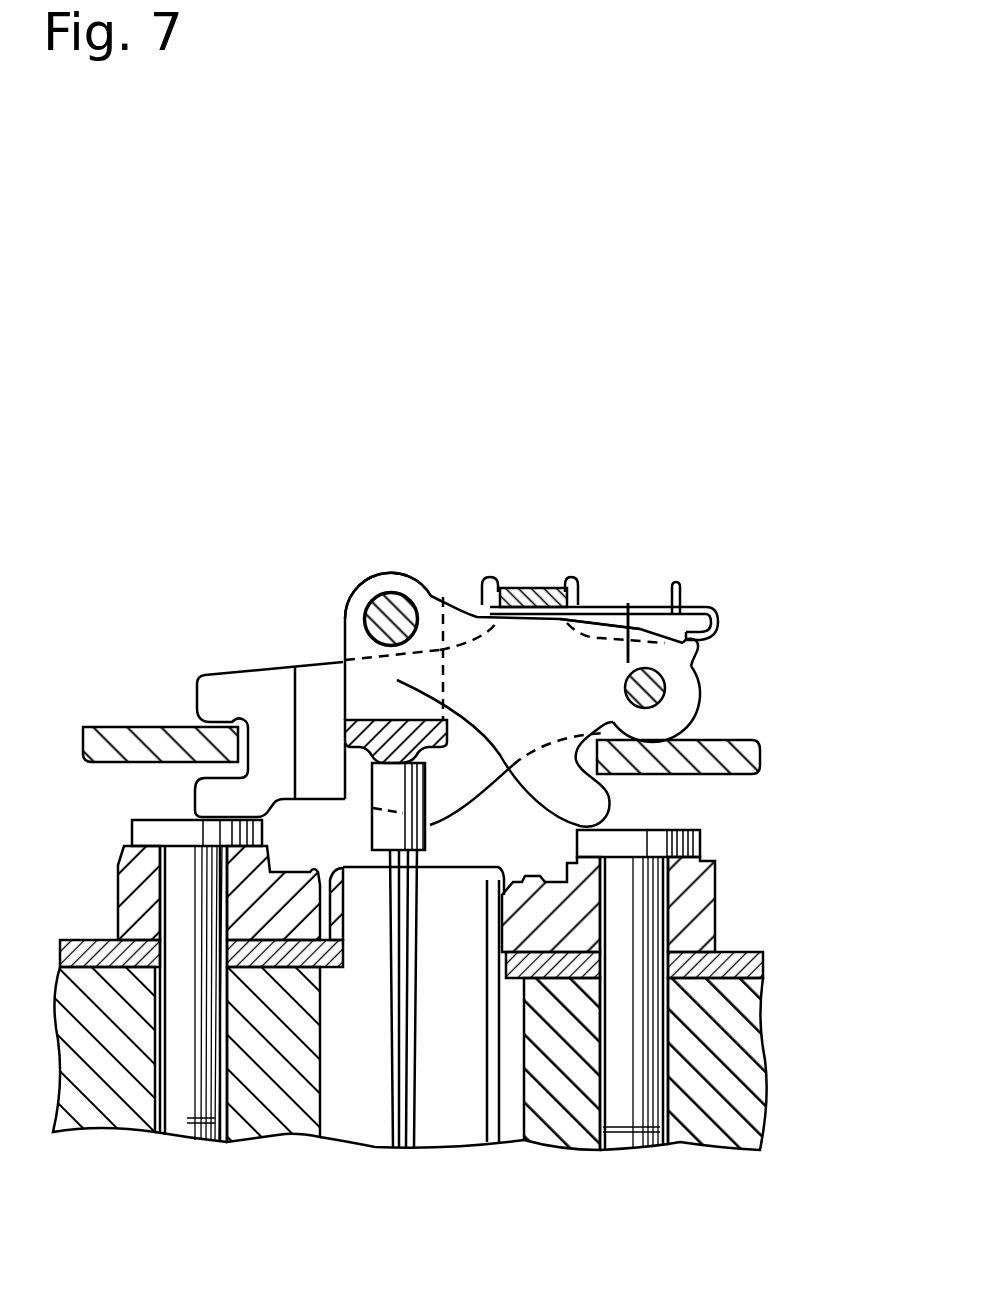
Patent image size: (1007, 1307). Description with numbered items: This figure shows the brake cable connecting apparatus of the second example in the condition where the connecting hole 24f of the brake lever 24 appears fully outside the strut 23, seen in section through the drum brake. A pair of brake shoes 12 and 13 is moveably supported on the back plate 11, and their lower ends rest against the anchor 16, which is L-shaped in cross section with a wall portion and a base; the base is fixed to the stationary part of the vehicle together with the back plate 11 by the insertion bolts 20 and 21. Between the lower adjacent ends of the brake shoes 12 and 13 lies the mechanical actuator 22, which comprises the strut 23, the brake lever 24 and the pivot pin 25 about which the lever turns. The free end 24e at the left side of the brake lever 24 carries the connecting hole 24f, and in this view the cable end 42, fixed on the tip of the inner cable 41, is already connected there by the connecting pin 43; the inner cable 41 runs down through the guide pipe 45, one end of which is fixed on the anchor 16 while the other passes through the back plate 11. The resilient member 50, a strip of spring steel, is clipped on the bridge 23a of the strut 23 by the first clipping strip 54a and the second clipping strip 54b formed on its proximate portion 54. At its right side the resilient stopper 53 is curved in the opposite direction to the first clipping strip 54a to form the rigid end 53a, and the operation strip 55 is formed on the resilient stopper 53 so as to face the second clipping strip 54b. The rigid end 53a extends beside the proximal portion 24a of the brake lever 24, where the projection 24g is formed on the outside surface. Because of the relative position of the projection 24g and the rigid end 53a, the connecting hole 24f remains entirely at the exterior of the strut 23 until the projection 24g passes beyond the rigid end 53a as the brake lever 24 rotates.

The back plate 11 is at (765, 965).
The brake shoe 12 is at (118, 712).
The brake shoe 13 is at (764, 758).
The anchor 16 is at (726, 913).
The insertion bolt 20 is at (137, 828).
The insertion bolt 21 is at (703, 843).
The mechanical actuator 22 is at (538, 627).
The strut 23 is at (312, 650).
The bridge 23a is at (547, 588).
The brake lever 24 is at (538, 631).
The proximal portion 24a is at (635, 620).
The free end 24e is at (418, 556).
The connecting hole 24f is at (368, 613).
The projection 24g is at (698, 650).
The pivot pin 25 is at (664, 684).
The inner cable 41 is at (405, 1145).
The cable end 42 is at (362, 704).
The connecting pin 43 is at (393, 596).
The guide pipe 45 is at (517, 1100).
The resilient member 50 is at (626, 590).
The resilient stopper 53 is at (747, 594).
The rigid end 53a is at (700, 637).
The proximate portion 54 is at (550, 545).
The first clipping strip 54a is at (486, 583).
The second clipping strip 54b is at (578, 590).
The operation strip 55 is at (678, 583).